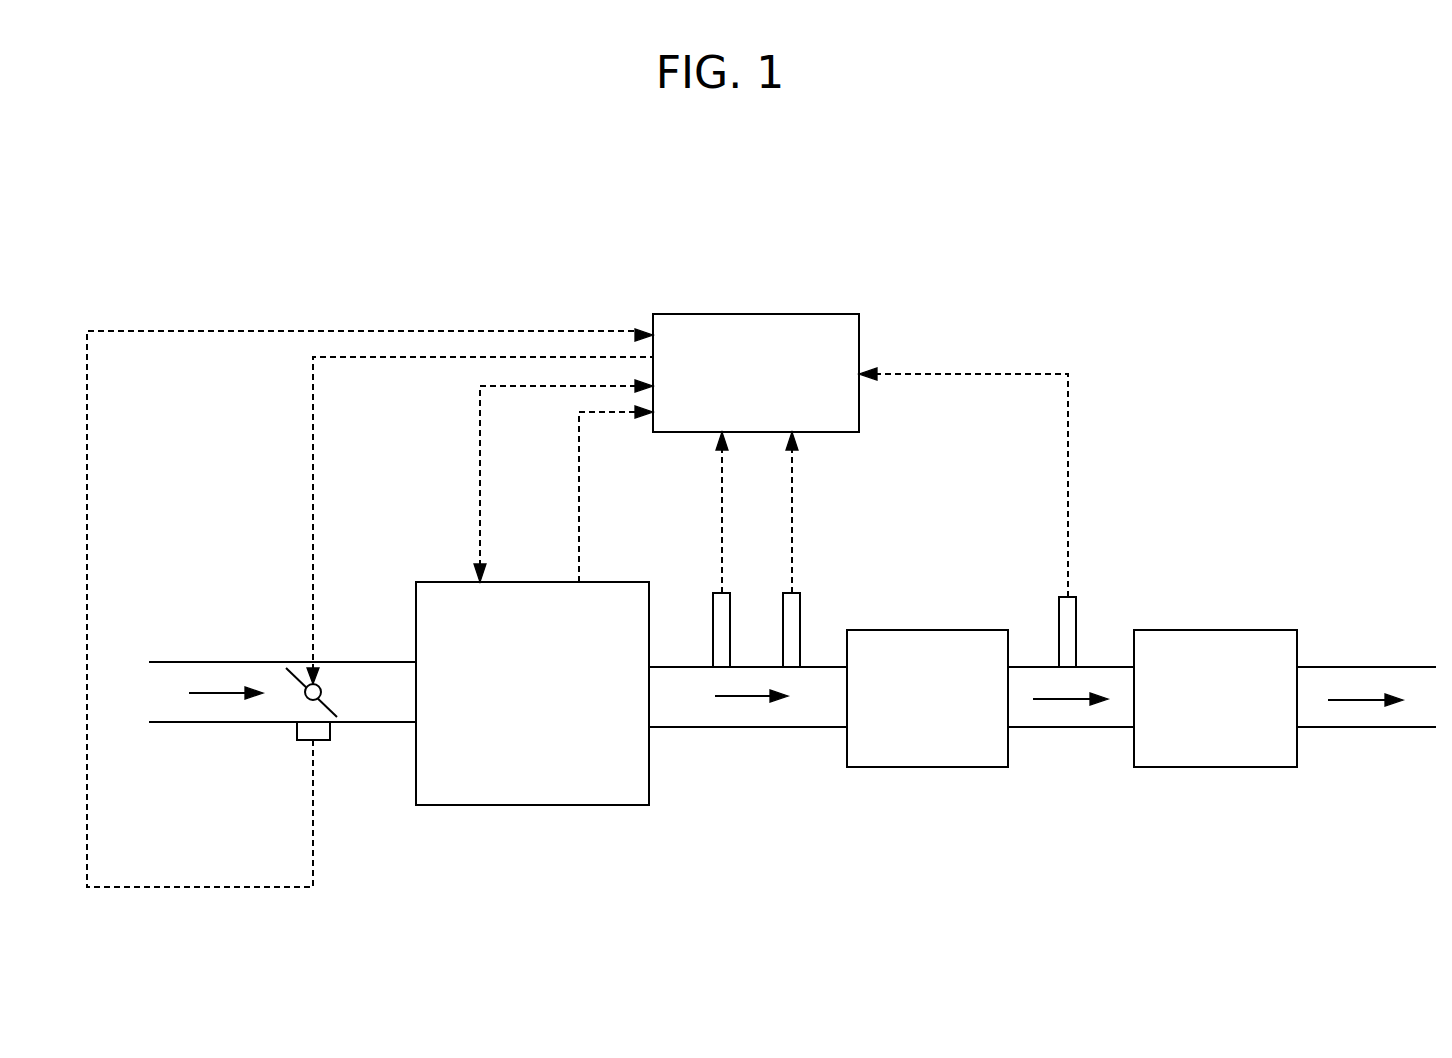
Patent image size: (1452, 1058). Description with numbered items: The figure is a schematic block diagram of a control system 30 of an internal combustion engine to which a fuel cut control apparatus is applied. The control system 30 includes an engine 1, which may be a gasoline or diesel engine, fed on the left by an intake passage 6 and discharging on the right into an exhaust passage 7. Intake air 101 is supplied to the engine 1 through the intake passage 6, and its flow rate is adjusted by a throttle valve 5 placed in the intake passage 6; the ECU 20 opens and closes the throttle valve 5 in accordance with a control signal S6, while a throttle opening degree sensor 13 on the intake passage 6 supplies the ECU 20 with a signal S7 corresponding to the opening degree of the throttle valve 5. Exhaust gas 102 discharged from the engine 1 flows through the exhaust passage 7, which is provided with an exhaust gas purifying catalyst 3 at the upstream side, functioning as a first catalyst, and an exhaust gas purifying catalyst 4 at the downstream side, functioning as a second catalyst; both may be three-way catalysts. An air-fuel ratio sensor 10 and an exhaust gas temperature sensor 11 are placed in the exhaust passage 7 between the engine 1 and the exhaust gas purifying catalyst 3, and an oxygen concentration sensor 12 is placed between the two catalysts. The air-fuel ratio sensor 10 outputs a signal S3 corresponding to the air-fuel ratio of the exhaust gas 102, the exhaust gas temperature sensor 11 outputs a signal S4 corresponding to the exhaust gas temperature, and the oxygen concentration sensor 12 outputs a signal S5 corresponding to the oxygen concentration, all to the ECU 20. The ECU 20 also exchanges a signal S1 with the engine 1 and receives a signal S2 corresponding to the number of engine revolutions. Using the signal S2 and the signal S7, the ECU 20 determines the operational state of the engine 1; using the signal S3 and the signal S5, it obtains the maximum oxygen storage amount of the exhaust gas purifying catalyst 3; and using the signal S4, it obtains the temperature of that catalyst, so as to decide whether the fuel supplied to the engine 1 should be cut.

The engine 1 is at (533, 805).
The exhaust gas purifying catalyst 3 is at (933, 767).
The exhaust gas purifying catalyst 4 is at (1218, 767).
The throttle valve 5 is at (320, 687).
The intake passage 6 is at (177, 722).
The exhaust passage 7 is at (1395, 728).
The air-fuel ratio sensor 10 is at (713, 604).
The exhaust gas temperature sensor 11 is at (800, 616).
The oxygen concentration sensor 12 is at (1076, 610).
The throttle opening degree sensor 13 is at (297, 733).
The ECU 20 is at (826, 314).
The control system 30 is at (732, 201).
The intake air 101 is at (220, 693).
The exhaust gas 102 is at (748, 697).
The engine control signal S1 is at (480, 447).
The signal S2 is at (580, 510).
The signal S3 is at (722, 470).
The signal S4 is at (792, 488).
The signal S5 is at (1068, 455).
The control signal S6 is at (313, 430).
The signal S7 is at (313, 827).